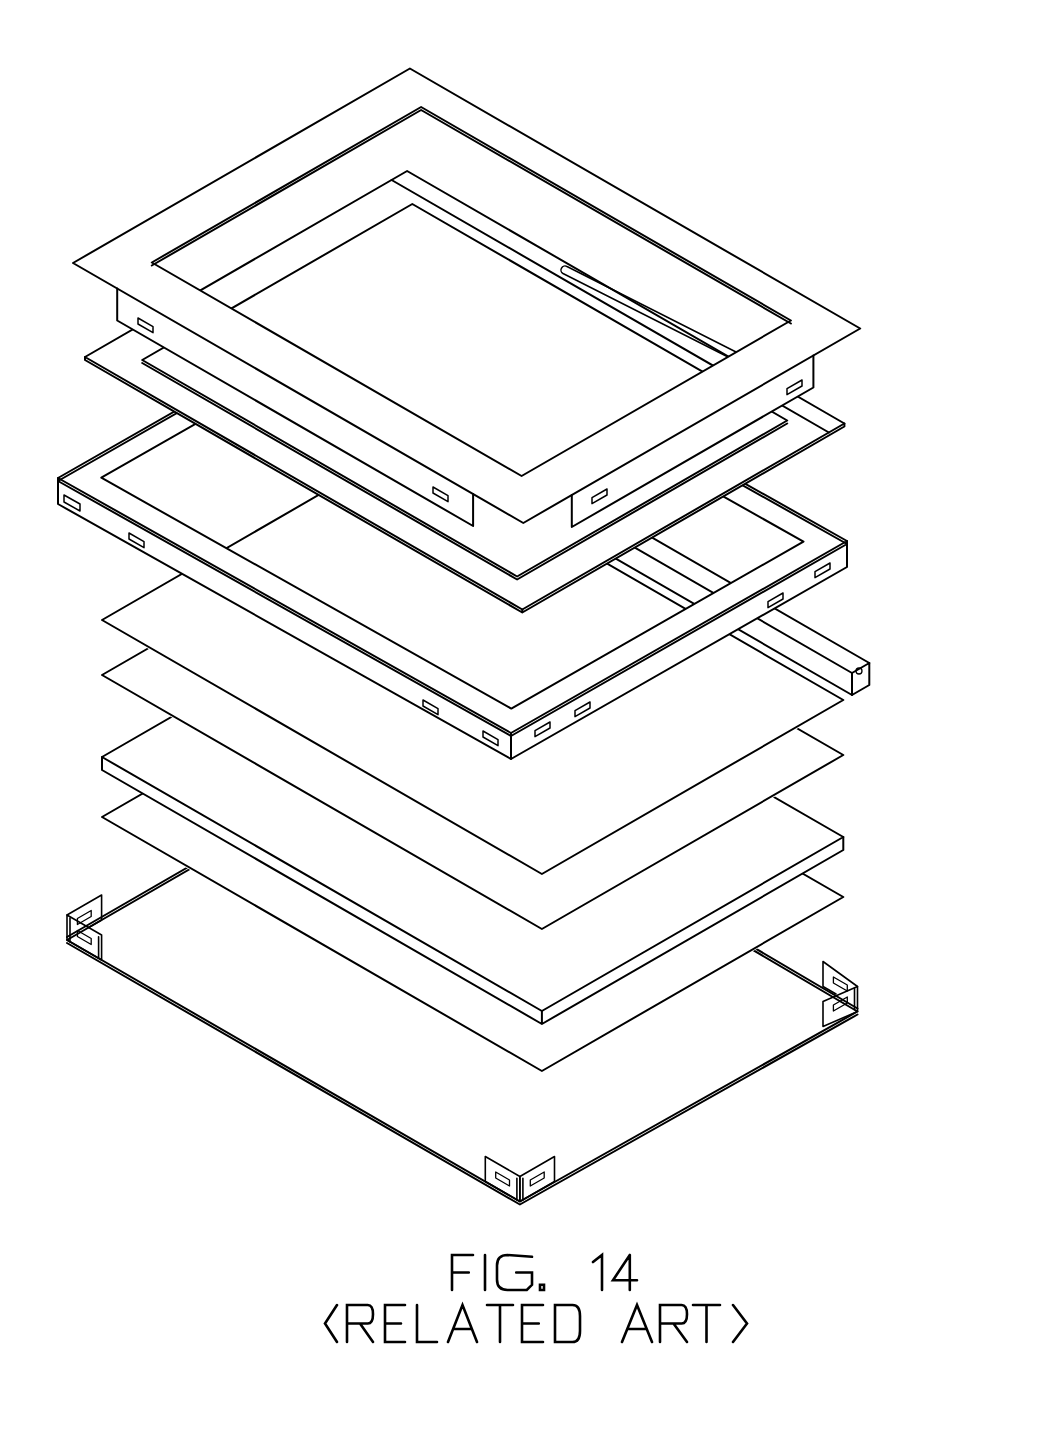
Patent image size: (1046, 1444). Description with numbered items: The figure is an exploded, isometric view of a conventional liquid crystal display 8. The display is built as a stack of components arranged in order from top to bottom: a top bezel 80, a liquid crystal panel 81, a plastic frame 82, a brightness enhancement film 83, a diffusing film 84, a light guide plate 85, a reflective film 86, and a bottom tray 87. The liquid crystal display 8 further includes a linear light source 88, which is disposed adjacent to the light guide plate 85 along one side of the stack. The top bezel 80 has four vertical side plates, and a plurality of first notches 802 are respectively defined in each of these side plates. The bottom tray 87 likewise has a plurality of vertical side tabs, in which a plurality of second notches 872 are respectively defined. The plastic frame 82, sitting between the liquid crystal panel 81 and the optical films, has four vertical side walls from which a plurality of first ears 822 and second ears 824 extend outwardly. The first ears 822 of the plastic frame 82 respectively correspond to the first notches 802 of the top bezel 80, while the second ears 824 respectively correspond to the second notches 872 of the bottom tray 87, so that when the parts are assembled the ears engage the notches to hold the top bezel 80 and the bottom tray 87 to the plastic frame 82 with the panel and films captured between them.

The liquid crystal display 8 is at (529, 31).
The top bezel 80 is at (487, 298).
The first notches 802 is at (806, 389).
The liquid crystal panel 81 is at (805, 430).
The plastic frame 82 is at (477, 522).
The first ears 822 is at (131, 546).
The second ears 824 is at (833, 565).
The brightness enhancement film 83 is at (808, 708).
The diffusing film 84 is at (788, 768).
The light guide plate 85 is at (812, 845).
The reflective film 86 is at (790, 905).
The bottom tray 87 is at (473, 994).
The second notches 872 is at (502, 1183).
The linear light source 88 is at (828, 652).